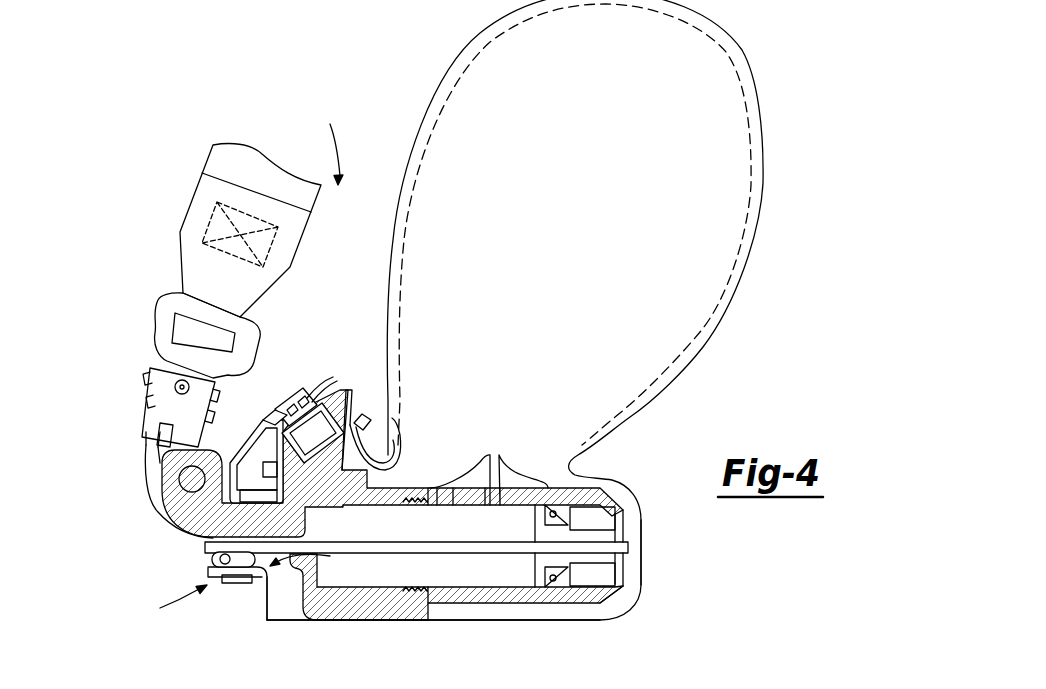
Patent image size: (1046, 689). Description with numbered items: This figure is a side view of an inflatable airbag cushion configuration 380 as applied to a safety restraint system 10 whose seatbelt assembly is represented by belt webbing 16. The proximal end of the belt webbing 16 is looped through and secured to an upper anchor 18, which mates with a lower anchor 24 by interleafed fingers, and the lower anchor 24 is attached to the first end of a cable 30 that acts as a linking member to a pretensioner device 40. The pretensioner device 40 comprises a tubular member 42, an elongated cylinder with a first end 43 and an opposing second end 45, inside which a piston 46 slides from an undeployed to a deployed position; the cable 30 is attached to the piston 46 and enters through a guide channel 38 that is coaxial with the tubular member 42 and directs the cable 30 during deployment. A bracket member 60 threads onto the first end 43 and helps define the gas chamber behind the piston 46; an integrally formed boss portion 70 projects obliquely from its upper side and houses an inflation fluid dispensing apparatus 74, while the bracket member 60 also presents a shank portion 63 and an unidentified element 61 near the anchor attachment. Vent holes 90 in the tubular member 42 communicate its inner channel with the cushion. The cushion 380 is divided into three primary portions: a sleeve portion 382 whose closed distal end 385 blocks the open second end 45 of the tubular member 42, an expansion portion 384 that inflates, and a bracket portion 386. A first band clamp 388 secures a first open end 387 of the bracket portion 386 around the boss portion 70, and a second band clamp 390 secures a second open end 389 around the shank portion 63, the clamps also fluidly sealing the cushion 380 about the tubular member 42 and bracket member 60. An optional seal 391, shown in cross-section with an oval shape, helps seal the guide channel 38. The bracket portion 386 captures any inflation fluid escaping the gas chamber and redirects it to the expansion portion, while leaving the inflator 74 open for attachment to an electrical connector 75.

The safety restraint system 10 is at (328, 144).
The belt webbing 16 is at (188, 222).
The upper anchor 18 is at (158, 312).
The lower anchor 24 is at (152, 412).
The cable 30 is at (408, 545).
The guide channel 38 is at (197, 537).
The pretensioner device 40 is at (172, 602).
The tubular member 42 is at (500, 621).
The first end 43 is at (430, 607).
The second end 45 is at (612, 602).
The piston 46 is at (535, 577).
The bracket member 60 is at (175, 498).
The pin 61 is at (200, 448).
The shank portion 63 is at (242, 502).
The boss portion 70 is at (343, 448).
The inflation fluid dispensing apparatus 74 is at (313, 440).
The electrical connector 75 is at (293, 402).
The vent holes 90 is at (491, 478).
The inflatable airbag cushion 380 is at (432, 86).
The sleeve portion 382 is at (573, 622).
The expansion portion 384 is at (760, 210).
The distal end 385 is at (643, 545).
The bracket portion 386 is at (265, 598).
The first open end 387 is at (268, 418).
The first band clamp 388 is at (372, 420).
The second open end 389 is at (216, 555).
The second band clamp 390 is at (234, 585).
The seal 391 is at (210, 568).